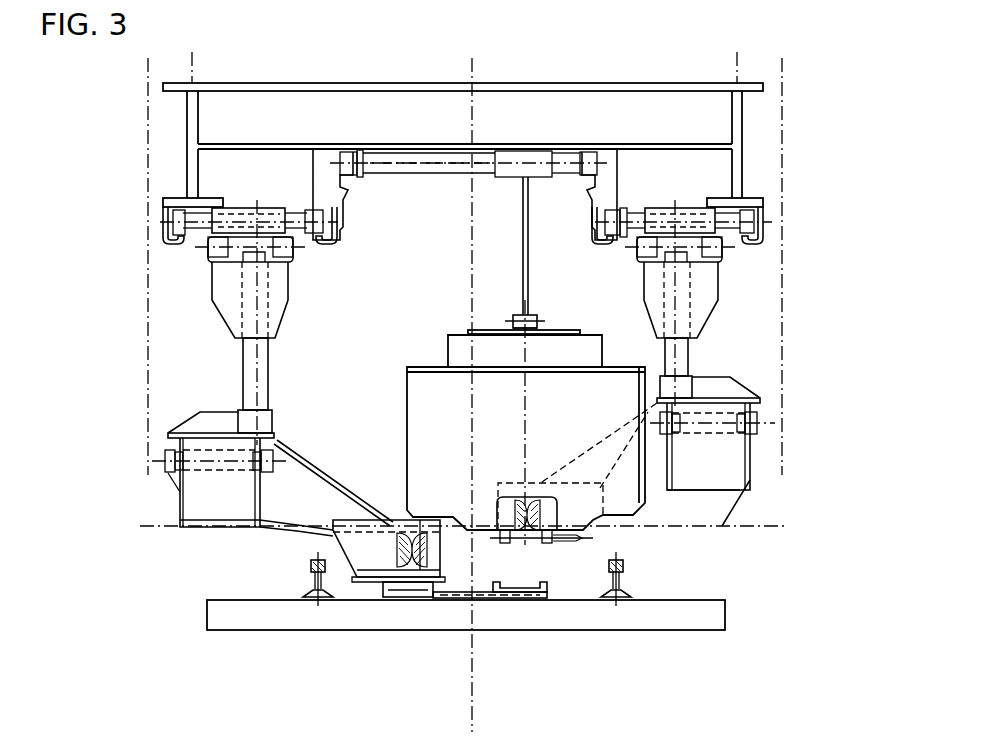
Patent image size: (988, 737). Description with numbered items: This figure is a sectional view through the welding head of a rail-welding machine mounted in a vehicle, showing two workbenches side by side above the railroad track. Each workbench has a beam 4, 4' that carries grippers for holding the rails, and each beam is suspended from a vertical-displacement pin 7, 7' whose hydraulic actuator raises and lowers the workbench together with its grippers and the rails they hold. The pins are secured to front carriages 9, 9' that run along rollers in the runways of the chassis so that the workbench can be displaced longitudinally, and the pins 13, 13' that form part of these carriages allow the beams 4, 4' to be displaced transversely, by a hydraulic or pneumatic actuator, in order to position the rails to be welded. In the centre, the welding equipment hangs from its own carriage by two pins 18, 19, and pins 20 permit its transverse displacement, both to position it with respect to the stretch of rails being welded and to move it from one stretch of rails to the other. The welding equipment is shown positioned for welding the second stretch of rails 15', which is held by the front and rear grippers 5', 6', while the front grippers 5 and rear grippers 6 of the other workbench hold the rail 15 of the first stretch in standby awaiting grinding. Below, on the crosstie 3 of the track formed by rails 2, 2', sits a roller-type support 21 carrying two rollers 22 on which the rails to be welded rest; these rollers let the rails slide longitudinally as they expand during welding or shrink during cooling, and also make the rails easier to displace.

The rail 2 is at (277, 579).
The rail 2' is at (655, 579).
The crosstie 3 is at (237, 617).
The beam 4 is at (152, 522).
The beam 4' is at (763, 499).
The front gripper 5 is at (272, 468).
The rear gripper 6 is at (272, 468).
The front gripper 5' is at (773, 433).
The rear gripper 6' is at (773, 433).
The vertical-displacement pin 7 is at (257, 335).
The vertical-displacement pin 7' is at (692, 317).
The front carriage 9 is at (189, 175).
The front carriage 9' is at (726, 176).
The pin 13 is at (192, 272).
The pin 13' is at (732, 231).
The rail 15 is at (377, 618).
The rail 15' is at (596, 607).
The pin 18 is at (451, 252).
The pin 19 is at (522, 271).
The pin 20 is at (402, 158).
The roller-type support 21 is at (482, 600).
The roller 22 is at (423, 590).